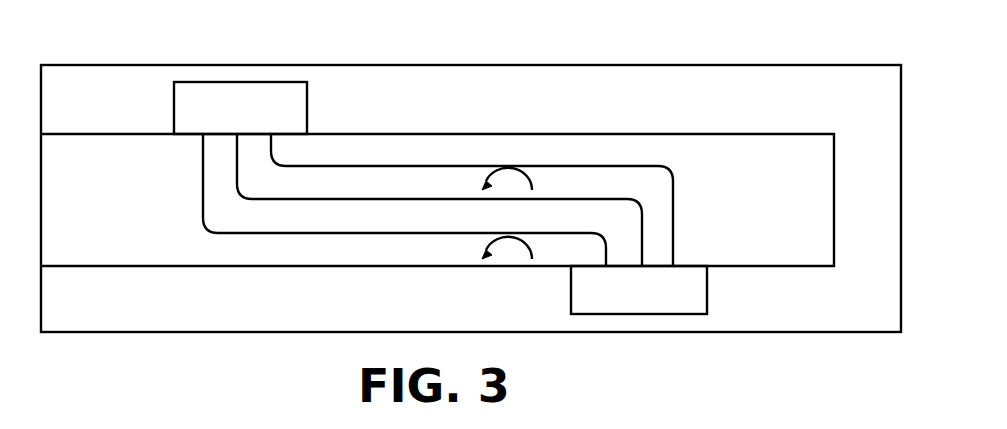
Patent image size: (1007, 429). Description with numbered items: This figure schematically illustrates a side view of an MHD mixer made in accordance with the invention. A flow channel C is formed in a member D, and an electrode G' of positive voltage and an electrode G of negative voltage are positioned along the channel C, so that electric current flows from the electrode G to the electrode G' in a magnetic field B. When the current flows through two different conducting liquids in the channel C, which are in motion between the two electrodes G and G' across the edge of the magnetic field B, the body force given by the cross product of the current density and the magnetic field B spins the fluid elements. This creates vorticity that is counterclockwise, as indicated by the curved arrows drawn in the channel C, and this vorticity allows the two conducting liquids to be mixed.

The member D is at (756, 66).
The flow channel C is at (834, 210).
The magnetic field B is at (141, 200).
The electrode G' is at (210, 108).
The electrode G is at (668, 290).